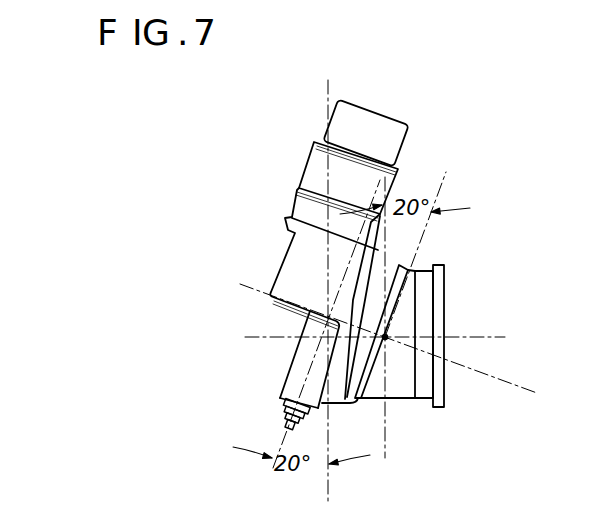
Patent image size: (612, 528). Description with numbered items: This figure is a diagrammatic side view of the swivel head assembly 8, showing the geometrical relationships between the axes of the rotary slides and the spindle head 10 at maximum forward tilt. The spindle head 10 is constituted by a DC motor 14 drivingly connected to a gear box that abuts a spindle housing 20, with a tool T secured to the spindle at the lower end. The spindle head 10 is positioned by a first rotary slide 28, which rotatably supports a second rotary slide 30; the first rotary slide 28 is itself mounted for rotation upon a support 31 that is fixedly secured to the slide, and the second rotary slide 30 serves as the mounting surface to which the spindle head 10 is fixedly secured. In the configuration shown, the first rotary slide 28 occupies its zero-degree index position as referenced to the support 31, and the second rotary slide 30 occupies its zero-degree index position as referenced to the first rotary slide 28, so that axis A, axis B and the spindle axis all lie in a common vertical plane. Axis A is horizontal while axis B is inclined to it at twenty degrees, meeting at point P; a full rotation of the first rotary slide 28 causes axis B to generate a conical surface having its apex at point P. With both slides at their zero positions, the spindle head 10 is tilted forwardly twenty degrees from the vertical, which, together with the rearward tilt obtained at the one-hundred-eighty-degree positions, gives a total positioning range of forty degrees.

The spindle head 10 is at (344, 246).
The DC motor 14 is at (396, 141).
The spindle housing 20 is at (264, 374).
The tool T is at (286, 427).
The first rotary slide 28 is at (399, 387).
The second rotary slide 30 is at (394, 266).
The support 31 is at (425, 384).
The point p P is at (385, 337).
The axis A is at (462, 337).
The axis B is at (493, 377).
The swivel head assembly 8 is at (203, 397).